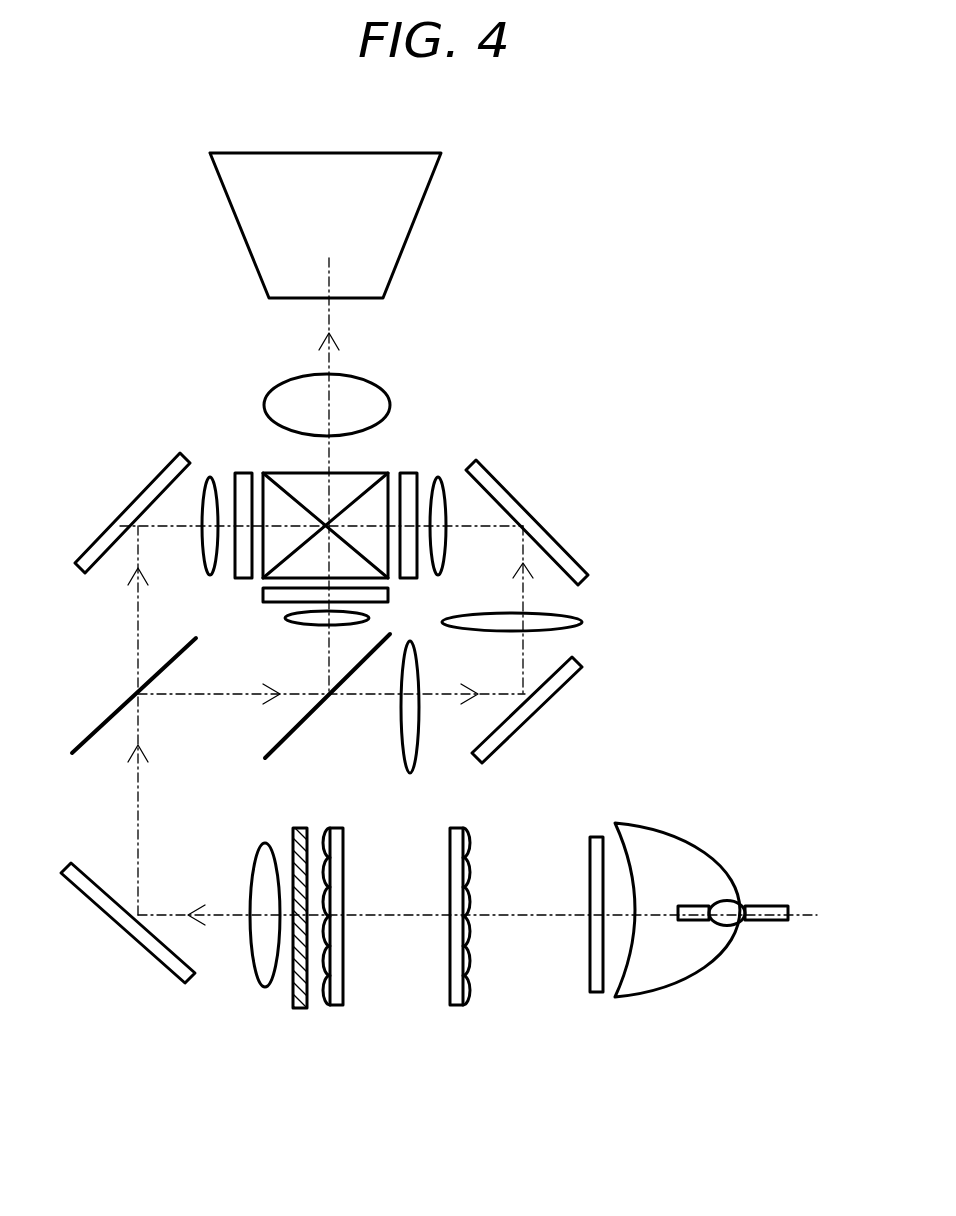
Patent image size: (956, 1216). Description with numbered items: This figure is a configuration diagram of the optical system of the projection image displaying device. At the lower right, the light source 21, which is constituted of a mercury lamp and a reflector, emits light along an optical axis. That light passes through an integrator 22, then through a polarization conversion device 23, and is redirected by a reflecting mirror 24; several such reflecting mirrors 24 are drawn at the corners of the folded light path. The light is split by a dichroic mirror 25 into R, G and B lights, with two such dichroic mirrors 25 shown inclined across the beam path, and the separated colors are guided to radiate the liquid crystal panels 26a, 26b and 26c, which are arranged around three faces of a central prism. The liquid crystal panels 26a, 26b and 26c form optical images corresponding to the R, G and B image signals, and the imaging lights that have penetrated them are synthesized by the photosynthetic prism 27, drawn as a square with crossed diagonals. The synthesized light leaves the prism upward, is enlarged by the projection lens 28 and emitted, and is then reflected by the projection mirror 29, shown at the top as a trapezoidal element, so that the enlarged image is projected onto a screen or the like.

The light source 21 is at (700, 983).
The integrator 22 is at (460, 1020).
The polarization conversion device 23 is at (290, 1000).
The reflecting mirror 24 is at (125, 510).
The dichroic mirror 25 is at (120, 706).
The liquid crystal panel 26a is at (263, 600).
The liquid crystal panel 26b is at (237, 475).
The liquid crystal panel 26c is at (417, 475).
The photosynthetic prism 27 is at (283, 473).
The projection lens 28 is at (386, 393).
The projection mirror 29 is at (407, 247).